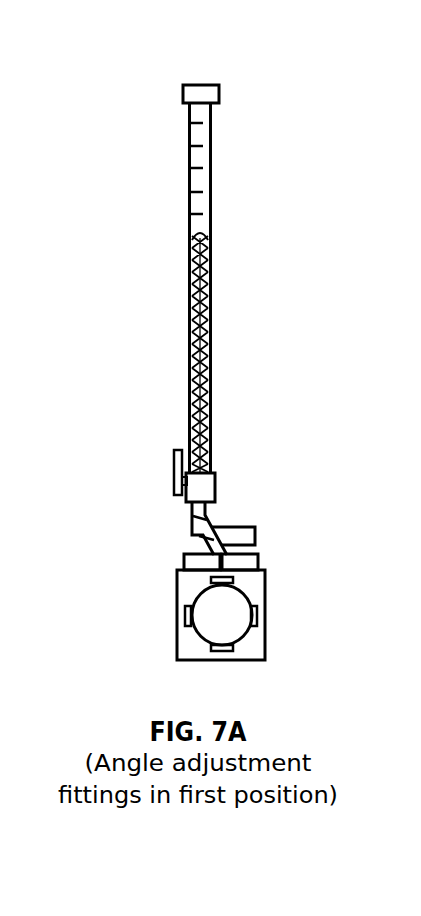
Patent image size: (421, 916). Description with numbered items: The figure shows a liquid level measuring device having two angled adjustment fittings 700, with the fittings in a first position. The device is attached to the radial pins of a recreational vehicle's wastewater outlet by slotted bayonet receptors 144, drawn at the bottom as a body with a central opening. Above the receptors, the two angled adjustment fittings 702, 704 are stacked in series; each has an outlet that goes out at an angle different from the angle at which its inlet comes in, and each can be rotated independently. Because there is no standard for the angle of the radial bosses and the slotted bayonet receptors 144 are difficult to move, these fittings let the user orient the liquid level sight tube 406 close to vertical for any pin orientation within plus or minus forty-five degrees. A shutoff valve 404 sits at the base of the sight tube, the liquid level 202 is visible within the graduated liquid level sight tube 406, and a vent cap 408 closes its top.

The liquid level measuring device having two angled adjustment fittings 700 is at (262, 94).
The vent cap 408 is at (183, 93).
The liquid level sight tube 406 is at (188, 178).
The liquid level 202 is at (188, 231).
The shutoff valve 404 is at (176, 472).
The angled adjustment fitting 702 is at (205, 512).
The angled adjustment fitting 704 is at (228, 553).
The slotted bayonet receptors 144 is at (177, 613).